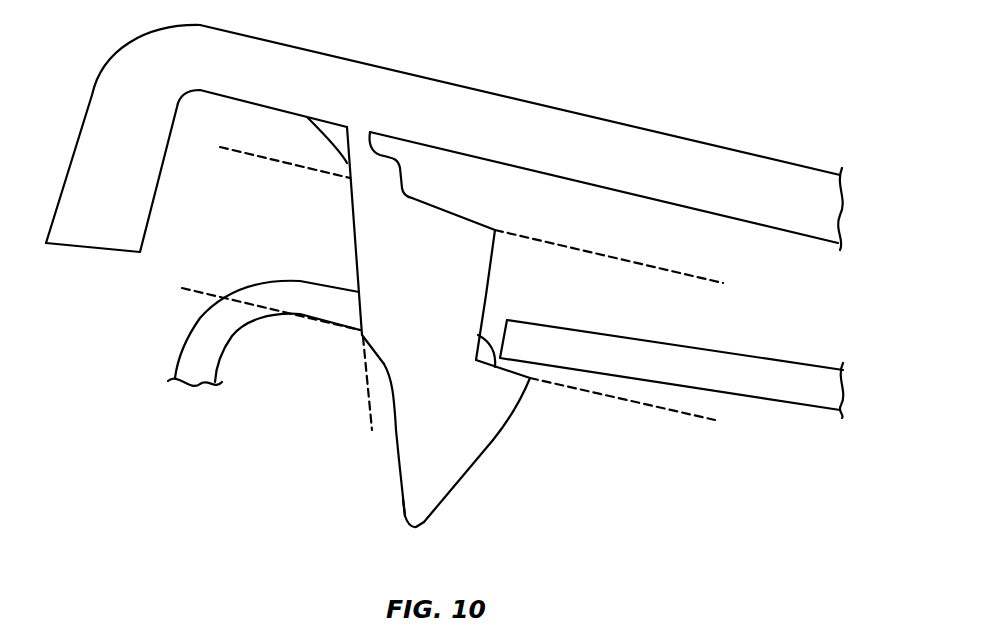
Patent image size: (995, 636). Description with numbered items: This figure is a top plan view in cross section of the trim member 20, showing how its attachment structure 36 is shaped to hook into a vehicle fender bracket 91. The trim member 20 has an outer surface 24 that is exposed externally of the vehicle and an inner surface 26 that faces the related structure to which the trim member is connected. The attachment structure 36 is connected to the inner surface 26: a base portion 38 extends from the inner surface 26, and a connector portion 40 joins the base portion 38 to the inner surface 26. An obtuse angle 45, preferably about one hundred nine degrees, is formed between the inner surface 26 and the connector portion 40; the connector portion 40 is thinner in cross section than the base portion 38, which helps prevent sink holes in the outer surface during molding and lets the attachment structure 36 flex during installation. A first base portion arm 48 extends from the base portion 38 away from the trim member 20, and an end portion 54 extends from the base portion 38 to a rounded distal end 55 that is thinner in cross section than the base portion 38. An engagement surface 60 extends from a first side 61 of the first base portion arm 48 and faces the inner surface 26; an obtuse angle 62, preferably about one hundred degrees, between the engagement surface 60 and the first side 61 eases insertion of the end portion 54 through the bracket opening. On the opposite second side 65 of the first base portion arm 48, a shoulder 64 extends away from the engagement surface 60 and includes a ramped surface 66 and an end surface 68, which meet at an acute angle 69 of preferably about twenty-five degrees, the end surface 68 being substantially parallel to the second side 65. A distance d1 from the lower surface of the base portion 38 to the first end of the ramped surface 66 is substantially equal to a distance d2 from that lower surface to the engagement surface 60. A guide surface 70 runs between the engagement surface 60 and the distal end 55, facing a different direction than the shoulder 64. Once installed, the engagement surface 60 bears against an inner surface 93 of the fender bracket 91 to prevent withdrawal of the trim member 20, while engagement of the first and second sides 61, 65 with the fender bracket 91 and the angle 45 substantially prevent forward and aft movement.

The first trim member 20 is at (740, 148).
The outer surface 24 is at (630, 130).
The inner surface 26 is at (702, 211).
The attachment structure 36 is at (515, 429).
The base portion 38 is at (451, 205).
The connector portion 40 is at (382, 148).
The angle 45 is at (320, 148).
The first base portion arm 48 is at (495, 247).
The end portion 54 is at (398, 510).
The distal end 55 is at (412, 529).
The engagement surface 60 is at (528, 370).
The first side 61 is at (488, 282).
The angle 62 is at (503, 350).
The shoulder 64 is at (397, 442).
The second side 65 is at (354, 237).
The ramped surface 66 is at (363, 343).
The end surface 68 is at (398, 482).
The angle 69 is at (380, 367).
The guide surface 70 is at (463, 477).
The fender bracket 91 is at (802, 414).
The inner surface of the fender bracket 93 is at (765, 402).
The distance d1 is at (228, 153).
The distance d2 is at (693, 417).